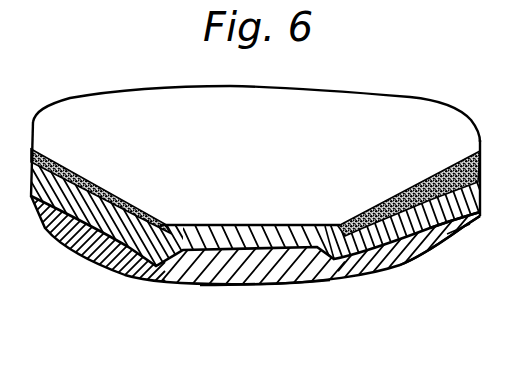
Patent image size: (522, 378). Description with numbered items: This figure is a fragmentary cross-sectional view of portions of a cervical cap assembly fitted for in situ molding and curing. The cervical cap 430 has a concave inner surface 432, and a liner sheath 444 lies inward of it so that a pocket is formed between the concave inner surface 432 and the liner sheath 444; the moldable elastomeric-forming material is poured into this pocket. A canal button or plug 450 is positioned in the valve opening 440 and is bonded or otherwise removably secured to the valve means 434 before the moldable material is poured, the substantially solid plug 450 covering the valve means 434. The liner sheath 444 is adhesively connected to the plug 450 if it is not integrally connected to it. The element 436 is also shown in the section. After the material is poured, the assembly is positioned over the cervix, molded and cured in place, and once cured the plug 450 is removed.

The cervical cap 430 is at (50, 231).
The concave inner surface 432 is at (457, 236).
The valve means 434 is at (267, 281).
The side wall 436 is at (453, 240).
The valve opening 440 is at (186, 225).
The liner sheath 444 is at (64, 167).
The canal button or plug 450 is at (254, 224).